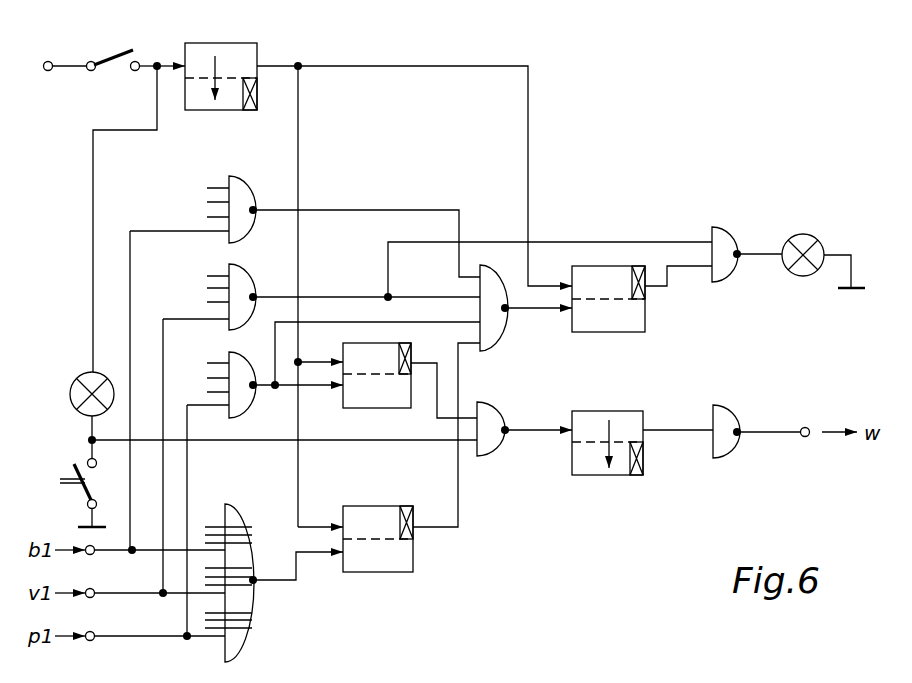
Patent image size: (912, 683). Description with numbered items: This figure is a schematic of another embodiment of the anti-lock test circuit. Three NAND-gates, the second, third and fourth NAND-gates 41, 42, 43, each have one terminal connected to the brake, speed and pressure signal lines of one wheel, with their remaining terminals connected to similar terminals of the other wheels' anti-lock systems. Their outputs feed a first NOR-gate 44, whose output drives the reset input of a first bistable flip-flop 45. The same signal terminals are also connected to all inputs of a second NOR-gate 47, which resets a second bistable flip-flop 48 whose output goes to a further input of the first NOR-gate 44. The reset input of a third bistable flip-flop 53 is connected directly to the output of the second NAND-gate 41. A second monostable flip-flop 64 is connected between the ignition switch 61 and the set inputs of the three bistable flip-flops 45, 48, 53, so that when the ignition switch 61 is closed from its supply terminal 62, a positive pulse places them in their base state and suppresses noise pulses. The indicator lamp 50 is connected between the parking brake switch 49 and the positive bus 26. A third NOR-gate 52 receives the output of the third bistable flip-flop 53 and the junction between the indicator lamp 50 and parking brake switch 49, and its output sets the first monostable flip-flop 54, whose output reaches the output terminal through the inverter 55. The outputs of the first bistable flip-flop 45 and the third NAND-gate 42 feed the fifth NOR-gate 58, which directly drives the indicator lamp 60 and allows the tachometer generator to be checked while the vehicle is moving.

The positive bus 26 is at (157, 58).
The second NAND-gate 41 is at (239, 369).
The third NAND-gate 42 is at (240, 282).
The fourth NAND-gate 43 is at (244, 193).
The first NOR-gate 44 is at (500, 329).
The first bistable flip-flop 45 is at (619, 323).
The second NOR-gate 47 is at (243, 648).
The second bistable flip-flop 48 is at (383, 562).
The parking brake switch 49 is at (90, 484).
The indicator lamp 50 is at (85, 382).
The third NOR-gate 52 is at (490, 447).
The third bistable flip-flop 53 is at (379, 396).
The first monostable flip-flop 54 is at (598, 470).
The inverter 55 is at (725, 445).
The fifth NOR-gate 58 is at (722, 236).
The indicator lamp 60 is at (803, 241).
The ignition switch 61 is at (116, 70).
The supply terminal 62 is at (48, 58).
The second monostable flip-flop 64 is at (243, 50).